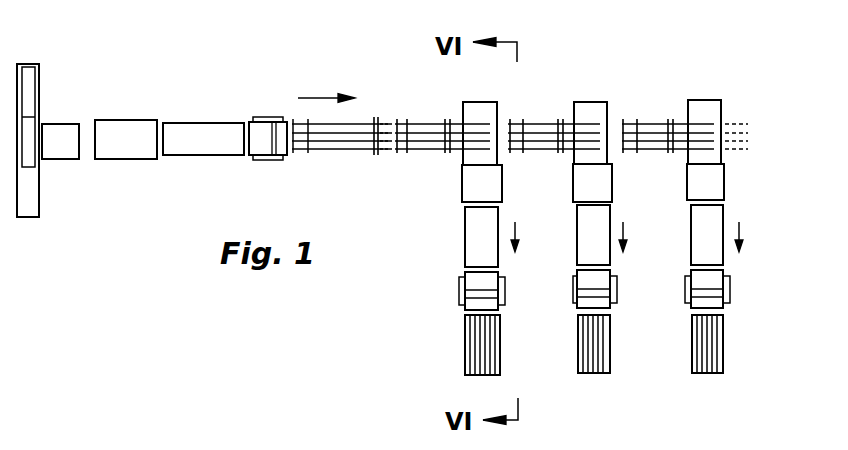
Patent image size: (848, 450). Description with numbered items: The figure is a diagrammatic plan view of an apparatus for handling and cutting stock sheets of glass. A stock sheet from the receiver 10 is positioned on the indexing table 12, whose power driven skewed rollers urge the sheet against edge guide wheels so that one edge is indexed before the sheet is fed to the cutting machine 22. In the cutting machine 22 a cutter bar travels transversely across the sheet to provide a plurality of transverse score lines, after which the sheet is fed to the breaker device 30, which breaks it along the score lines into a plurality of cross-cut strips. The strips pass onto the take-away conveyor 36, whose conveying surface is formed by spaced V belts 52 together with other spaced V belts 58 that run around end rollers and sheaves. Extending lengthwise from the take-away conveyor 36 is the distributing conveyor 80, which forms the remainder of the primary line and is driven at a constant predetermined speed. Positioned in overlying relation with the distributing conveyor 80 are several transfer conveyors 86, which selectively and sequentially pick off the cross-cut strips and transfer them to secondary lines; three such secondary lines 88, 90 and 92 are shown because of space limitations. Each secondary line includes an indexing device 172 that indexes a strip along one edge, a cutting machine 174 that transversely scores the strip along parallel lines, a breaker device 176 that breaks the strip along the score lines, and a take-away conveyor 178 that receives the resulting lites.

The receiver 10 is at (54, 159).
The indexing table 12 is at (110, 159).
The cutting machine 22 is at (187, 155).
The breaker device 30 is at (258, 162).
The take-away conveyor 36 is at (391, 115).
The V belts 52 is at (338, 153).
The V belts 58 is at (297, 153).
The distributing conveyor 80 is at (373, 158).
The transfer conveyors 86 is at (422, 157).
The secondary line 88 is at (465, 232).
The secondary line 90 is at (577, 232).
The secondary line 92 is at (691, 232).
The indexing device 172 is at (462, 190).
The cutting machine 174 is at (493, 257).
The breaker device 176 is at (459, 289).
The take-away conveyor 178 is at (465, 352).